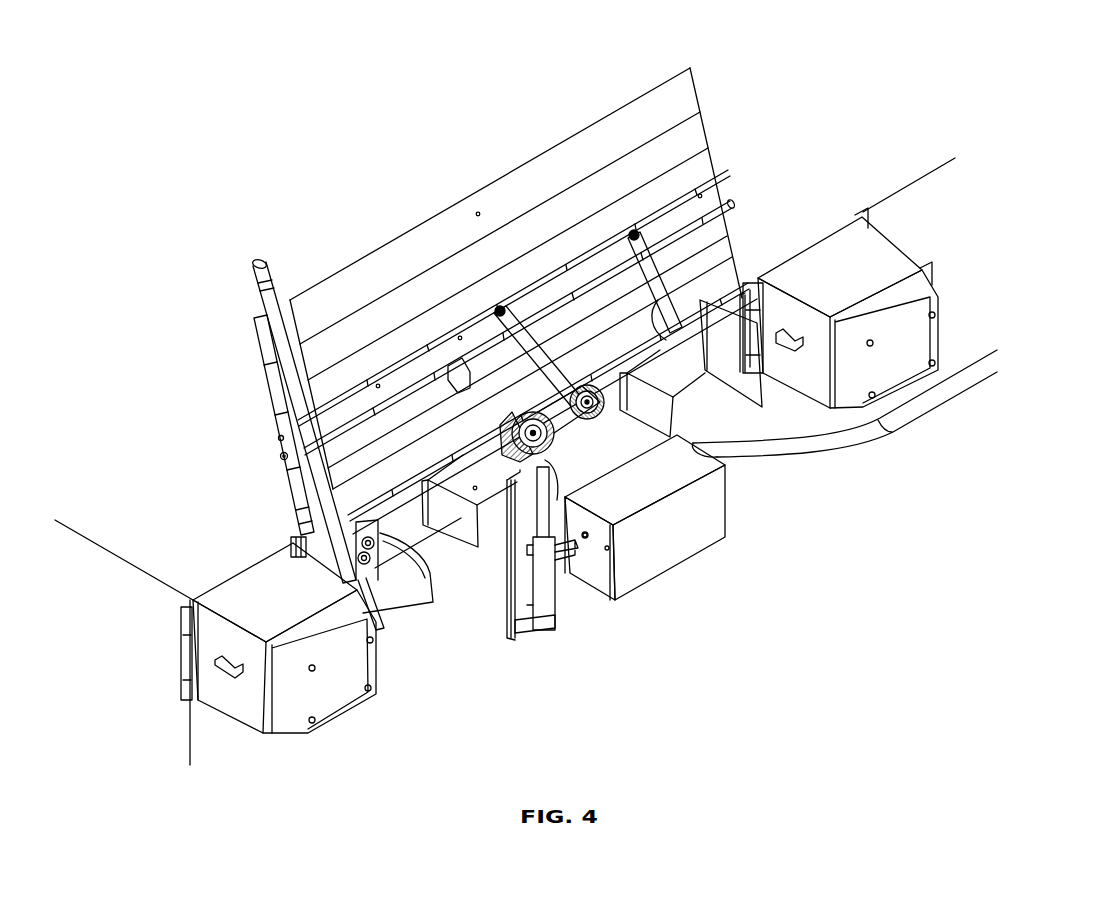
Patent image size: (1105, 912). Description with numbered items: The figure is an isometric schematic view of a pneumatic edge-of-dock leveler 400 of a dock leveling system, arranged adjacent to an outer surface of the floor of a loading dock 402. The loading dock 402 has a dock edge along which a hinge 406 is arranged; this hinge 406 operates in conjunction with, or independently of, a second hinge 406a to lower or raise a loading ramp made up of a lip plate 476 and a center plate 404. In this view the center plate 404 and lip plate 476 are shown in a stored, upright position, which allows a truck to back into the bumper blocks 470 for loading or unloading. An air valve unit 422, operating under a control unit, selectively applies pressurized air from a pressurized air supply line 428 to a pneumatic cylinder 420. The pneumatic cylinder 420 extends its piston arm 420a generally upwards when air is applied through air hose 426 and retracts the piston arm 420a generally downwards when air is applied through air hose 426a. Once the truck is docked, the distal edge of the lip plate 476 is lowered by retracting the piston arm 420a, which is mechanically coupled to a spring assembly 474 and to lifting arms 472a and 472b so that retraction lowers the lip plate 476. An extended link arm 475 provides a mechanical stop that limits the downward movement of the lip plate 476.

The edge-of-dock leveler 400 is at (1003, 103).
The loading dock 402 is at (189, 562).
The center plate 404 is at (290, 495).
The hinge 406 is at (303, 535).
The hinge 406a is at (277, 457).
The pneumatic cylinder 420 is at (540, 628).
The piston arm 420a is at (507, 541).
The air valve unit 422 is at (678, 560).
The air hose 426 is at (558, 548).
The air hose 426a is at (548, 470).
The pressurized air supply line 428 is at (862, 447).
The bumper blocks 470 is at (280, 736).
The lifting arm 472a is at (566, 440).
The lifting arm 472b is at (563, 368).
The spring assembly 474 is at (605, 422).
The extended link arm 475 is at (657, 273).
The lip plate 476 is at (263, 372).